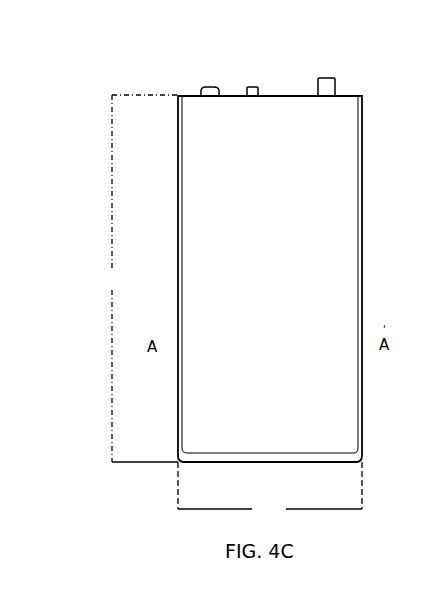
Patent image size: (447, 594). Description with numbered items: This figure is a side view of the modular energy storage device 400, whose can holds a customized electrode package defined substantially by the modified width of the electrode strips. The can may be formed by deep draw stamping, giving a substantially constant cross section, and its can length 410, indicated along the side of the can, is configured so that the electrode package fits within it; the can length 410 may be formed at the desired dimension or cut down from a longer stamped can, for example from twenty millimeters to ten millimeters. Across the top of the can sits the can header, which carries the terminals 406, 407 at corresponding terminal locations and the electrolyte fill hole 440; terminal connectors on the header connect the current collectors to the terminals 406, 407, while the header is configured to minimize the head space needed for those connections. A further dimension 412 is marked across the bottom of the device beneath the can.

The battery pack 400 is at (97, 399).
The terminal block 406 is at (351, 79).
The terminal post 407 is at (263, 79).
The dome contact 440 is at (196, 83).
The height dimension 410 is at (138, 278).
The width dimension 412 is at (270, 490).